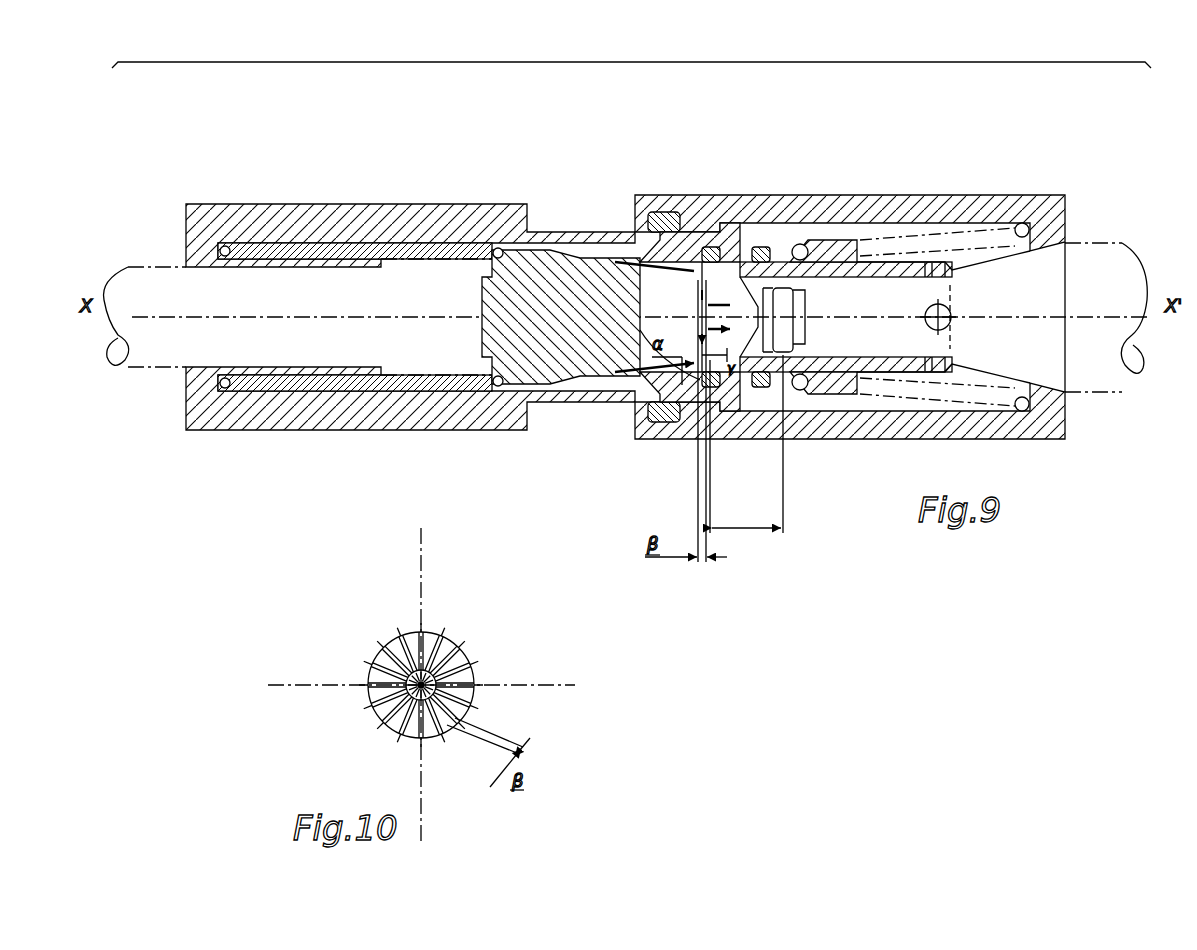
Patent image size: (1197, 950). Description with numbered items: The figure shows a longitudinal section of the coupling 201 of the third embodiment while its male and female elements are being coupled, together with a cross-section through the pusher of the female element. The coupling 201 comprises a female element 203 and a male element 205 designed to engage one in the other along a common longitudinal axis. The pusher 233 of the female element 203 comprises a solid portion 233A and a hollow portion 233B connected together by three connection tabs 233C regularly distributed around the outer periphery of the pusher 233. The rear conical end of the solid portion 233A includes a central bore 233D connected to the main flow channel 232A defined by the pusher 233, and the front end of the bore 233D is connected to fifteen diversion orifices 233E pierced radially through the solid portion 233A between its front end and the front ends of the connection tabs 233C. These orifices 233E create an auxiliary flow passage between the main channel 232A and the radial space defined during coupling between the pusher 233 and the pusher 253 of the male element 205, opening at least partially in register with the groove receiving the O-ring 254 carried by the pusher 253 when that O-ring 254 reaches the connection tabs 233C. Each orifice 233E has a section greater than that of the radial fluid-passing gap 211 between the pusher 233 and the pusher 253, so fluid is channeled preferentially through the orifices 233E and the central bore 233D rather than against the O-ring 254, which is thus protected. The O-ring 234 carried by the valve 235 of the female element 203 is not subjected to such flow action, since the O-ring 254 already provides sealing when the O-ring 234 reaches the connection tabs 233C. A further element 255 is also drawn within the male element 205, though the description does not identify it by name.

In FIG. 9, the coupling 201 is at (631, 51).
In FIG. 9, the female element 203 is at (968, 188).
In FIG. 9, the male element 205 is at (283, 197).
In FIG. 9, the radial fluid-passing gap 211 is at (798, 392).
In FIG. 9, the main flow channel 232A is at (1046, 281).
In FIG. 9, the pusher 233 is at (870, 394).
In FIG. 10, the pusher 233 is at (450, 610).
In FIG. 9, the solid portion 233A is at (636, 195).
In FIG. 9, the hollow portion 233B is at (808, 255).
In FIG. 9, the connection tabs 233C is at (746, 444).
In FIG. 9, the central bore 233D is at (803, 327).
In FIG. 9, the diversion orifices 233E is at (690, 325).
In FIG. 10, the diversion orifices 233E is at (478, 677).
In FIG. 9, the O-ring 234 is at (715, 385).
In FIG. 9, the valve 235 is at (755, 392).
In FIG. 9, the pusher 253 is at (684, 430).
In FIG. 9, the O-ring 254 is at (755, 245).
In FIG. 9, the piston 255 is at (490, 295).